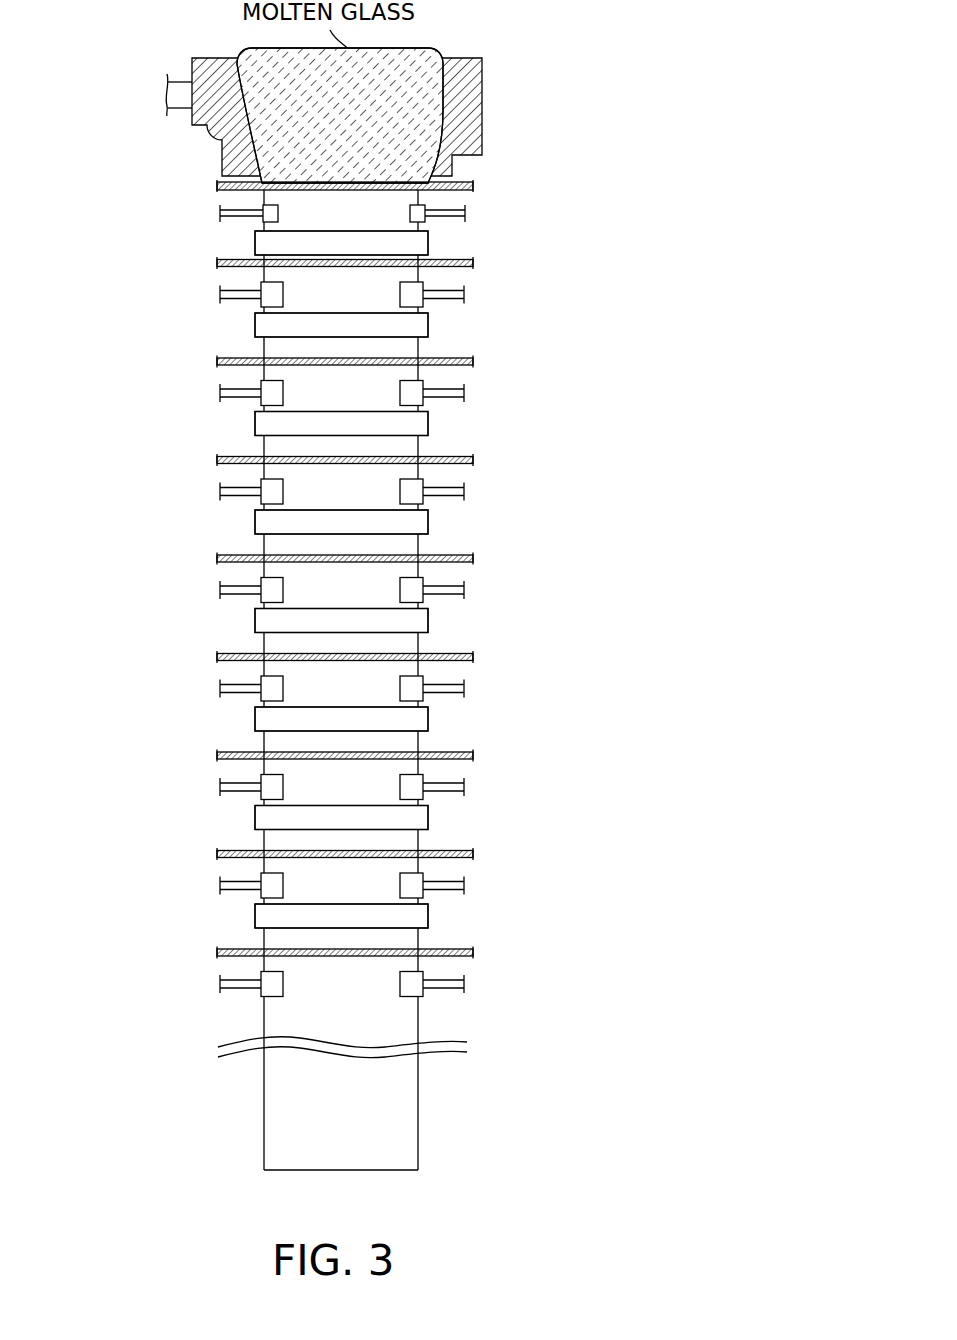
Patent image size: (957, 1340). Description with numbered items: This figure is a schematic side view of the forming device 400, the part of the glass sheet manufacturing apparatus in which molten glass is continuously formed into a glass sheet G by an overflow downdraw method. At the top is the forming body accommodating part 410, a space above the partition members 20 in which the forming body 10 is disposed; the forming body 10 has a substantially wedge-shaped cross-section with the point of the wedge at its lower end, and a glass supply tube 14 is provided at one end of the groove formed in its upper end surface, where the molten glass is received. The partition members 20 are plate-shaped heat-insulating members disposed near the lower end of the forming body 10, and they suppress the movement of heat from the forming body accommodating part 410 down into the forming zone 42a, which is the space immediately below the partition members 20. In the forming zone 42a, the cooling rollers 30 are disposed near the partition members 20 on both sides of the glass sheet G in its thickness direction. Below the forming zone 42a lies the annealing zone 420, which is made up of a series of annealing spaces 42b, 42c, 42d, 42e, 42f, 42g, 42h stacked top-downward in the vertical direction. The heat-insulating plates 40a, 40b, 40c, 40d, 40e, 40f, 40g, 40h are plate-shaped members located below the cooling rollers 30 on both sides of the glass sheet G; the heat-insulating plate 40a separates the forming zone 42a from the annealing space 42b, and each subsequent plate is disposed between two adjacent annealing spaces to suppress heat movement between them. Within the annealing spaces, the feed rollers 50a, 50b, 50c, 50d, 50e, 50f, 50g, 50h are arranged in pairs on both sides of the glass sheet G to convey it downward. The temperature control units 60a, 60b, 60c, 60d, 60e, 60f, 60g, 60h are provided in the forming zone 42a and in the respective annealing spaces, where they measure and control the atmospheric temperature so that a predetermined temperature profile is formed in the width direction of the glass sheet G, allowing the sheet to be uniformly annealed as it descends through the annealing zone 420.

The forming device 400 is at (577, 78).
The forming body accommodating part 410 is at (118, 76).
The annealing zone 420 is at (113, 312).
The forming body 10 is at (218, 129).
The glass supply tube 14 is at (187, 90).
The partition member 20 is at (476, 187).
The cooling roller 30 is at (219, 213).
The heat-insulating plate 40a is at (476, 264).
The heat-insulating plate 40b is at (476, 362).
The heat-insulating plate 40c is at (476, 461).
The heat-insulating plate 40d is at (476, 560).
The heat-insulating plate 40e is at (476, 658).
The heat-insulating plate 40f is at (476, 756).
The heat-insulating plate 40g is at (476, 855).
The heat-insulating plate 40h is at (476, 954).
The forming zone 42a is at (234, 243).
The annealing space 42b is at (234, 325).
The annealing space 42c is at (234, 424).
The annealing space 42d is at (234, 522).
The annealing space 42e is at (234, 620).
The annealing space 42f is at (234, 719).
The annealing space 42g is at (234, 818).
The annealing space 42h is at (234, 916).
The feed roller 50a is at (219, 294).
The feed roller 50b is at (219, 393).
The feed roller 50c is at (219, 492).
The feed roller 50d is at (219, 590).
The feed roller 50e is at (219, 688).
The feed roller 50f is at (219, 787).
The feed roller 50g is at (219, 886).
The feed roller 50h is at (219, 984).
The temperature control unit 60a is at (428, 243).
The temperature control unit 60b is at (428, 325).
The temperature control unit 60c is at (428, 424).
The temperature control unit 60d is at (428, 522).
The temperature control unit 60e is at (428, 620).
The temperature control unit 60f is at (428, 719).
The temperature control unit 60g is at (428, 818).
The temperature control unit 60h is at (428, 916).
The glass sheet G is at (403, 1022).